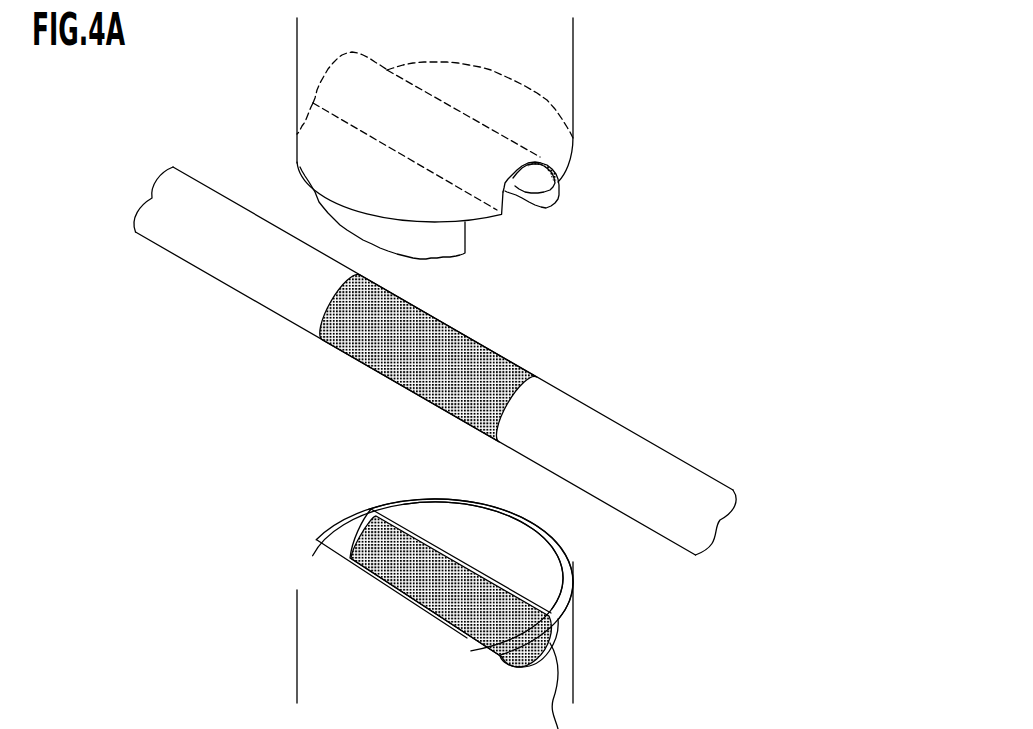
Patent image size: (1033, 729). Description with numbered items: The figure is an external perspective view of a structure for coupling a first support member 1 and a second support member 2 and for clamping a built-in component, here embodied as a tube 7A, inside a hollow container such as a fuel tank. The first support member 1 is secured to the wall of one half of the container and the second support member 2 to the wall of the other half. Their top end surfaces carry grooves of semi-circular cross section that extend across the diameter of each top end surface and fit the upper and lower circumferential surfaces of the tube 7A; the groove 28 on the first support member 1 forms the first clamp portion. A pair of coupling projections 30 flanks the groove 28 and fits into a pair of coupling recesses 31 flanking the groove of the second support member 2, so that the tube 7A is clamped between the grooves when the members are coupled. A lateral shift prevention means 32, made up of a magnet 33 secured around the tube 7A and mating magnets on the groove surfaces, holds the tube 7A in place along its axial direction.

The first support member 1 is at (587, 53).
The second support member 2 is at (450, 584).
The tube 7A is at (618, 438).
The groove 28 is at (517, 203).
The coupling projections 30 is at (460, 250).
The coupling recesses 31 is at (330, 625).
The lateral shift prevention means 32 is at (435, 361).
The component embodied as a magnet 33 is at (485, 360).